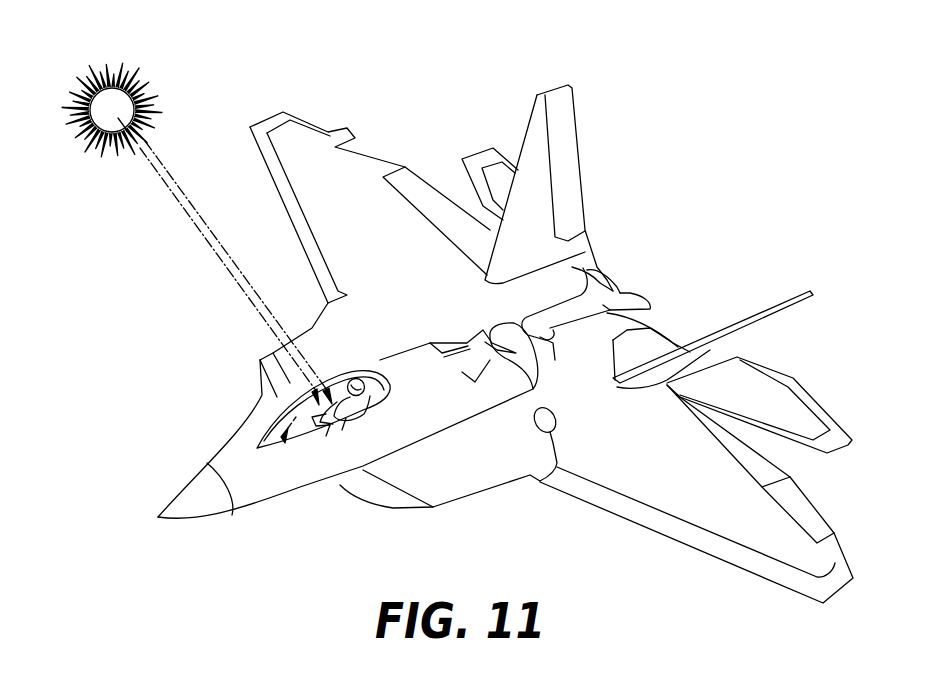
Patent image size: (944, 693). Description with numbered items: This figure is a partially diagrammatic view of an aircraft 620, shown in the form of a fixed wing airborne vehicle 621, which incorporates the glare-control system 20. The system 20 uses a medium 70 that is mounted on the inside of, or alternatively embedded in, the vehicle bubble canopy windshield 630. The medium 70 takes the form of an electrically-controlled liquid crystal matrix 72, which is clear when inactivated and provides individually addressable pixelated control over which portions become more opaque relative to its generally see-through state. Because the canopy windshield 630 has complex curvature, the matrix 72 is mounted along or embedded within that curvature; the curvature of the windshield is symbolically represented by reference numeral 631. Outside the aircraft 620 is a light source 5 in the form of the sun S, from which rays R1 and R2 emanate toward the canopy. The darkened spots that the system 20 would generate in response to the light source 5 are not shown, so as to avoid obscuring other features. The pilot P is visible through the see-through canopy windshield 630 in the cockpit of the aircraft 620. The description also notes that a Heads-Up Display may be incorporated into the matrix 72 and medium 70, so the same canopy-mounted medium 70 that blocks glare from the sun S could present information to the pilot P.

The light source 5 is at (117, 78).
The Sun S is at (129, 84).
The ray R1 is at (236, 266).
The ray R2 is at (268, 334).
The pilot P is at (357, 375).
The system 20 is at (286, 432).
The medium 70 is at (303, 416).
The liquid crystal matrix 72 is at (267, 380).
The aircraft 620 is at (505, 361).
The fixed wing airborne vehicle 621 is at (765, 580).
The bubble canopy windshield 630 is at (268, 428).
The canopy transparency 631 is at (333, 428).